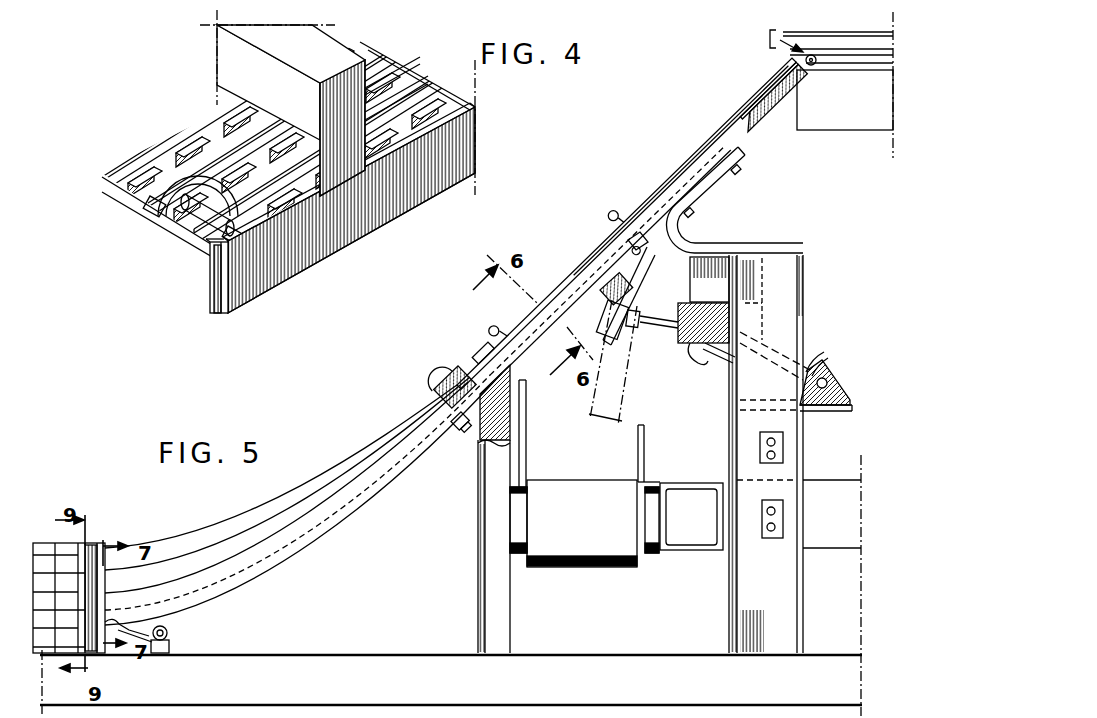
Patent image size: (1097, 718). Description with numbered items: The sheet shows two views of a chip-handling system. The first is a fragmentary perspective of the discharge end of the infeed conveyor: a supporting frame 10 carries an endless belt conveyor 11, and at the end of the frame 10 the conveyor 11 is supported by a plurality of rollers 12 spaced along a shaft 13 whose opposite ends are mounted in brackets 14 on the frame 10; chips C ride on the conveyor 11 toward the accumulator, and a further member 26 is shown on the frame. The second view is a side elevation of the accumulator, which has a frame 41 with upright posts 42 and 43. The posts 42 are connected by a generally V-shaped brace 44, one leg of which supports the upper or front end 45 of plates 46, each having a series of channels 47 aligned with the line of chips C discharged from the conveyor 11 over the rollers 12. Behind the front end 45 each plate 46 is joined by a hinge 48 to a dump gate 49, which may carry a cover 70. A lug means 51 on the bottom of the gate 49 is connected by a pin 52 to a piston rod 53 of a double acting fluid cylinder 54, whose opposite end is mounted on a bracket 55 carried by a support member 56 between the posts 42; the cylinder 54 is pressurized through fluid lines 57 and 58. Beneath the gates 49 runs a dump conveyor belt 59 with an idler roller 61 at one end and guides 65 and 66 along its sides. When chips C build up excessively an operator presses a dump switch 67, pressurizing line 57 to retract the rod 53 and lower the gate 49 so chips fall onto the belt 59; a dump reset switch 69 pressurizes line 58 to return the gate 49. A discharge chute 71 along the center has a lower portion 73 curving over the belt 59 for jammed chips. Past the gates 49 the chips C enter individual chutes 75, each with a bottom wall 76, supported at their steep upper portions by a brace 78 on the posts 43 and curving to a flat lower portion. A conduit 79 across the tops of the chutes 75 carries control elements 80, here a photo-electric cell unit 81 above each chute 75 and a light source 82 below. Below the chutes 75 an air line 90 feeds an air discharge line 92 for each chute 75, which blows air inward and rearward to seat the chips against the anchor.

In FIG. 4, the supporting frame 10 is at (337, 255).
In FIG. 5, the supporting frame 10 is at (856, 136).
In FIG. 4, the conveyor 11 is at (408, 100).
In FIG. 5, the conveyor 11 is at (860, 58).
In FIG. 4, the rollers 12 is at (172, 208).
In FIG. 4, the shaft 13 is at (214, 230).
In FIG. 5, the shaft 13 is at (818, 66).
In FIG. 4, the brackets 14 is at (212, 262).
In FIG. 5, the brackets 14 is at (770, 35).
In FIG. 4, the block 26 is at (318, 44).
In FIG. 4, the chips C is at (207, 110).
In FIG. 5, the frame 41 is at (396, 664).
In FIG. 5, the upright posts 42 is at (796, 608).
In FIG. 5, the upright posts 43 is at (490, 572).
In FIG. 5, the V-shaped brace 44 is at (748, 246).
In FIG. 5, the front end 45 is at (772, 74).
In FIG. 5, the plates 46 is at (768, 113).
In FIG. 5, the channels 47 is at (760, 103).
In FIG. 5, the hinge 48 is at (641, 251).
In FIG. 5, the dump gate 49 is at (571, 274).
In FIG. 5, the lug means 51 is at (608, 334).
In FIG. 5, the pin 52 is at (638, 312).
In FIG. 5, the piston rod 53 is at (680, 306).
In FIG. 5, the double acting fluid cylinder 54 is at (718, 358).
In FIG. 5, the bracket 55 is at (834, 386).
In FIG. 5, the support member 56 is at (830, 406).
In FIG. 5, the fluid line 57 is at (688, 356).
In FIG. 5, the fluid line 58 is at (818, 351).
In FIG. 5, the dump conveyor belt 59 is at (592, 563).
In FIG. 5, the idler roller 61 is at (524, 563).
In FIG. 5, the guide 65 is at (527, 453).
In FIG. 5, the guide 66 is at (638, 450).
In FIG. 5, the dump switch 67 is at (767, 442).
In FIG. 5, the dump reset switch 69 is at (776, 455).
In FIG. 5, the cover 70 is at (534, 309).
In FIG. 5, the discharge chute 71 is at (636, 286).
In FIG. 5, the lower portion 73 is at (605, 316).
In FIG. 5, the chutes 75 is at (391, 478).
In FIG. 5, the bottom wall 76 is at (244, 552).
In FIG. 5, the brace 78 is at (506, 396).
In FIG. 5, the conduit 79 is at (467, 360).
In FIG. 5, the control elements 80 is at (424, 396).
In FIG. 5, the photo-electric cell unit 81 is at (428, 374).
In FIG. 5, the light source 82 is at (458, 430).
In FIG. 5, the air line 90 is at (169, 631).
In FIG. 5, the air discharge line 92 is at (146, 640).